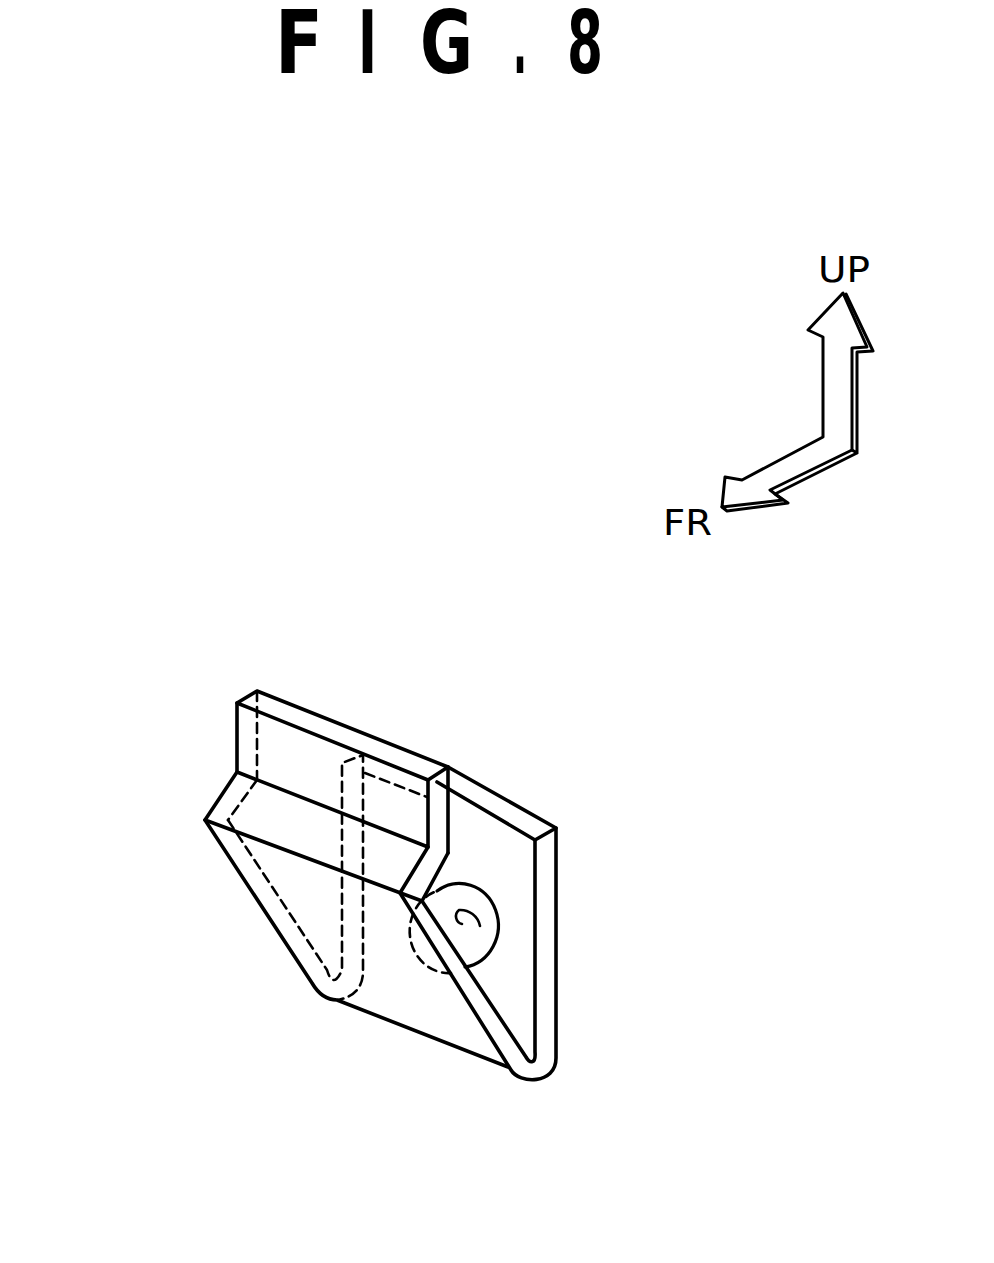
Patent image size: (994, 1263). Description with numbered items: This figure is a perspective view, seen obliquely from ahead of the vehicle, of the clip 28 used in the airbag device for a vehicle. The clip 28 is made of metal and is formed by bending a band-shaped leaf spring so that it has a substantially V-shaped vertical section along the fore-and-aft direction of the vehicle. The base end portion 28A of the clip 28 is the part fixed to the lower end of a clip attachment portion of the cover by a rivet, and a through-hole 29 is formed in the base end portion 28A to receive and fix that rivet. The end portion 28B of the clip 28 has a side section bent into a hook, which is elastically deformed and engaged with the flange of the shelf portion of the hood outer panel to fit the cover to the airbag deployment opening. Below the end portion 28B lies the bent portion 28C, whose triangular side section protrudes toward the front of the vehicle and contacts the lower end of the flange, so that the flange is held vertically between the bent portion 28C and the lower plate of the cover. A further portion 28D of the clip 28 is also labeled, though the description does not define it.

The clip 28 is at (387, 925).
The base end portion 28A is at (510, 857).
The end portion 28B is at (290, 752).
The bent portion 28C is at (275, 850).
The bracket lower flange 28D is at (420, 1040).
The through-hole 29 is at (482, 927).